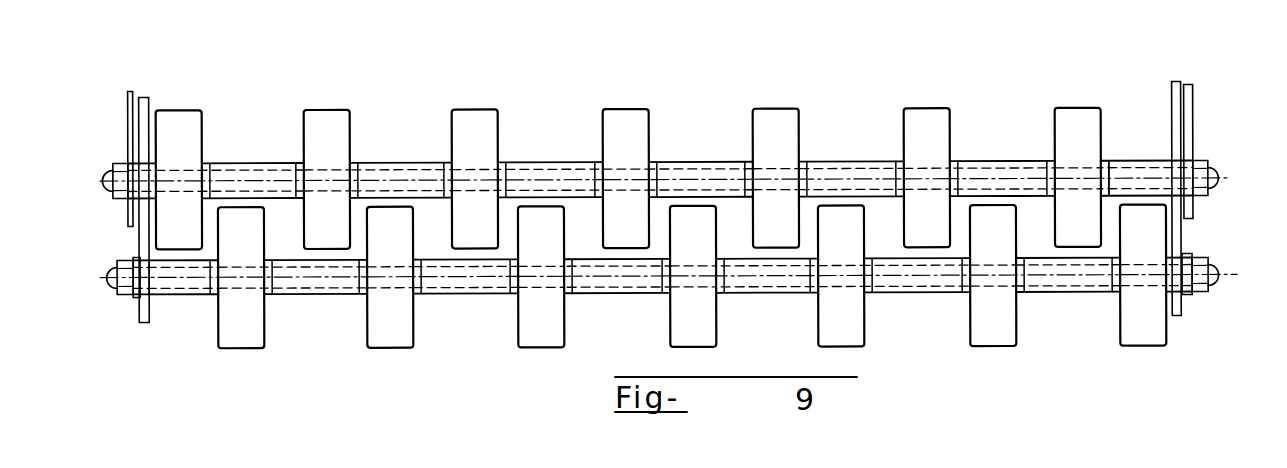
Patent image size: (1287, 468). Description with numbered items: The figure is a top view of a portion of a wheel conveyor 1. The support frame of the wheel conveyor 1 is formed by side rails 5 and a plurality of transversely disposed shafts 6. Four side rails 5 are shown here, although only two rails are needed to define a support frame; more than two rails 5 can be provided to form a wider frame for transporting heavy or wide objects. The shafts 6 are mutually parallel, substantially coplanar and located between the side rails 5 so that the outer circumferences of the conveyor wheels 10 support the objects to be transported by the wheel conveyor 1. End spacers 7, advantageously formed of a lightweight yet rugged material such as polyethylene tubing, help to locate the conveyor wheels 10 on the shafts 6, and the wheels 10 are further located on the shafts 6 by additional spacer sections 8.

The wheel conveyor 1 is at (1047, 66).
The side rails 5 is at (132, 90).
The shafts 6 is at (989, 167).
The end spacers 7 is at (1131, 162).
The spacer sections 8 is at (229, 162).
The conveyor wheels 10 is at (173, 110).